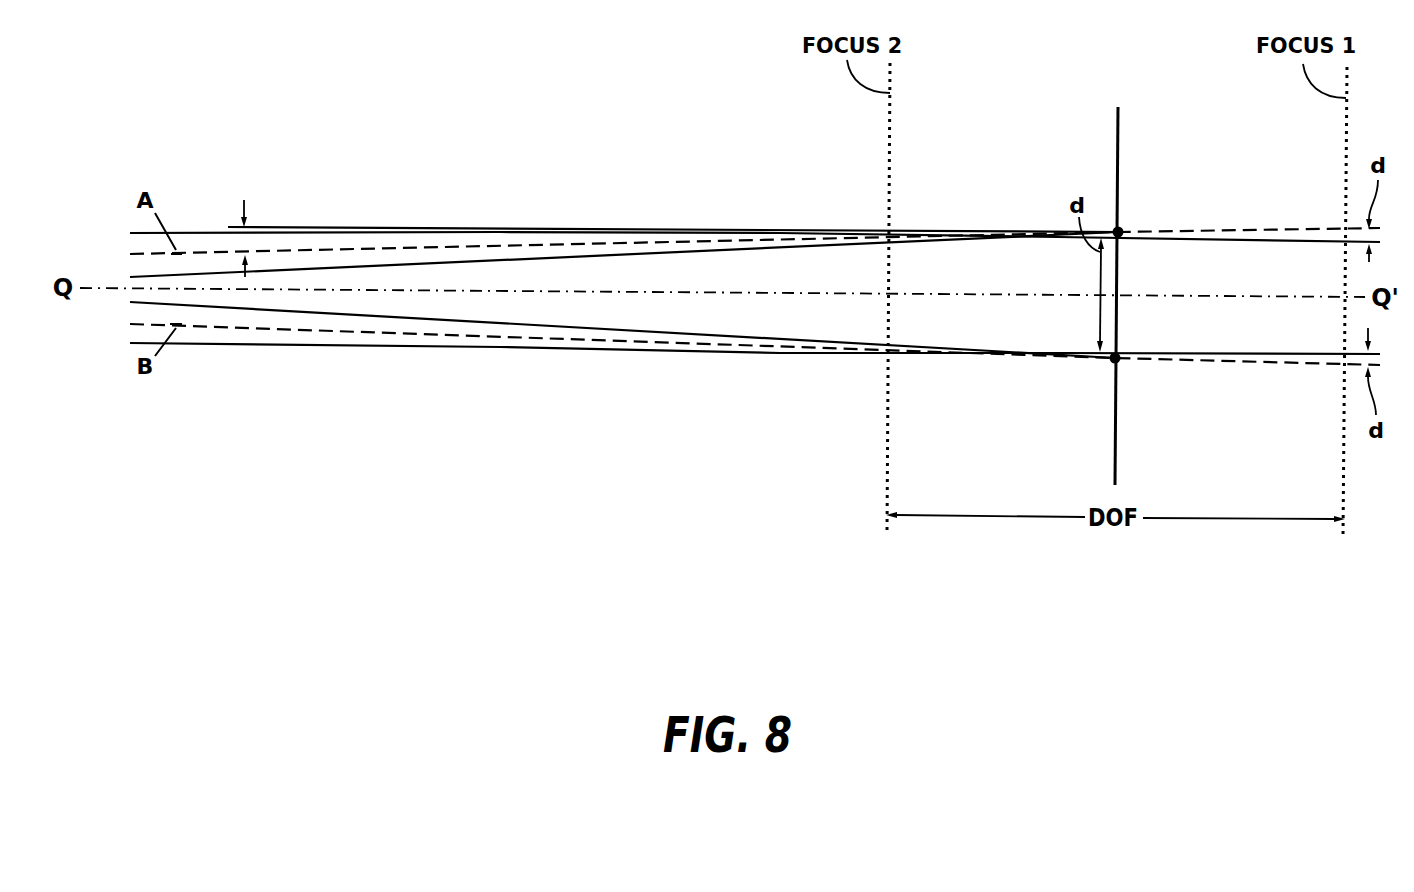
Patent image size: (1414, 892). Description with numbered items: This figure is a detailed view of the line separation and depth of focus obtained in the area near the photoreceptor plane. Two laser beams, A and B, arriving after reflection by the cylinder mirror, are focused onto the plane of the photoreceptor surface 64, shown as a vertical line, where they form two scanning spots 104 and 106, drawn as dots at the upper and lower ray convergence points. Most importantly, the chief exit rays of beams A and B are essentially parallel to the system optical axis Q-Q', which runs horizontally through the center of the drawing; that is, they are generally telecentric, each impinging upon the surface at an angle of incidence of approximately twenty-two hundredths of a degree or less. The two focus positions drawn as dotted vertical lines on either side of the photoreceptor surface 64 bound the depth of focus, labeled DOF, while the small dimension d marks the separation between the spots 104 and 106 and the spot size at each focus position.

The photoreceptor surface 64 is at (1116, 140).
The scanning spot 104 is at (1134, 221).
The scanning spot 106 is at (1134, 373).